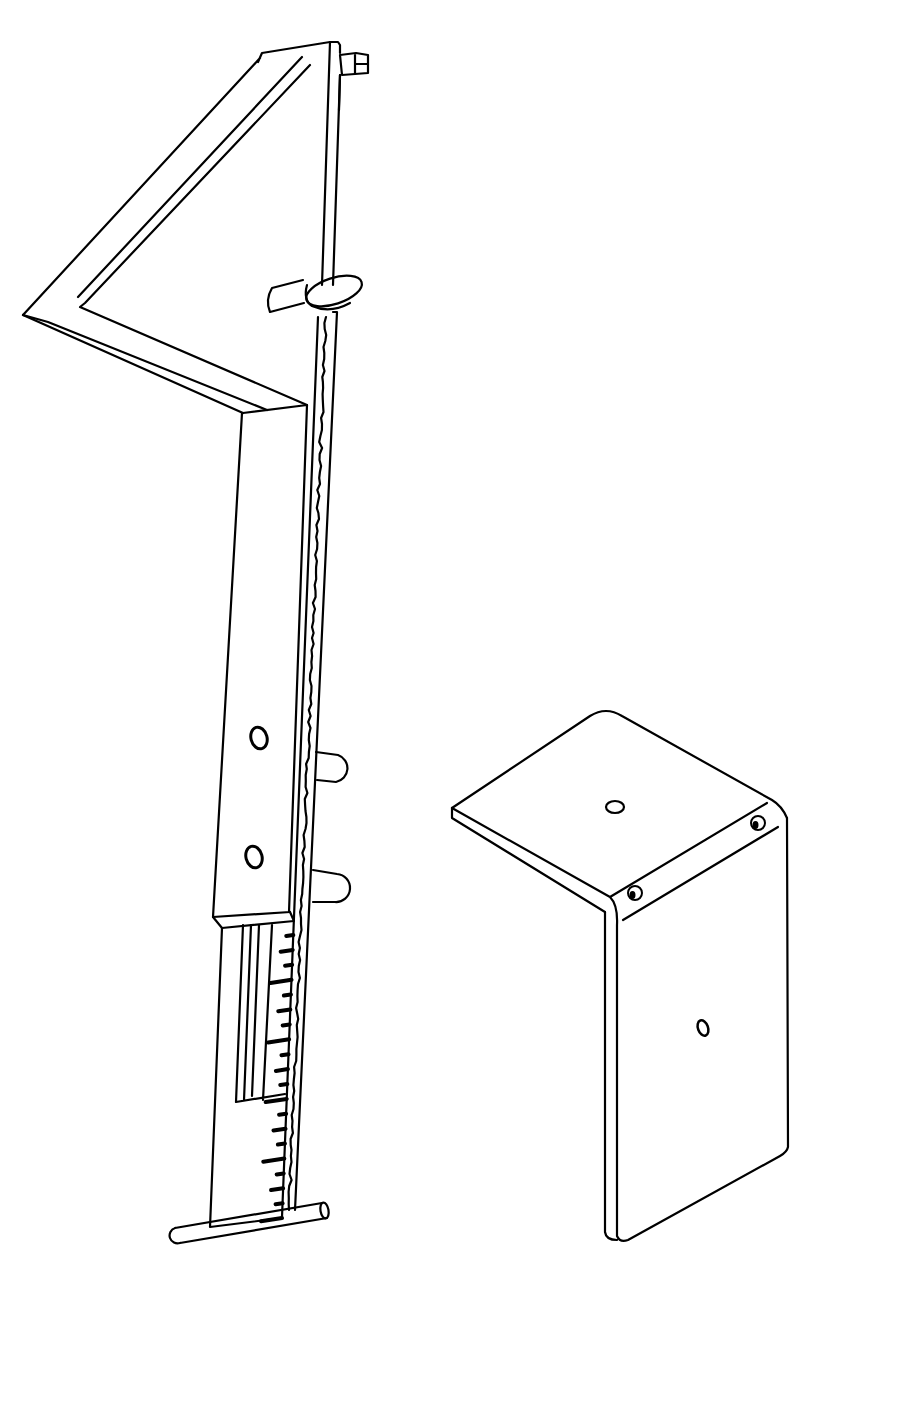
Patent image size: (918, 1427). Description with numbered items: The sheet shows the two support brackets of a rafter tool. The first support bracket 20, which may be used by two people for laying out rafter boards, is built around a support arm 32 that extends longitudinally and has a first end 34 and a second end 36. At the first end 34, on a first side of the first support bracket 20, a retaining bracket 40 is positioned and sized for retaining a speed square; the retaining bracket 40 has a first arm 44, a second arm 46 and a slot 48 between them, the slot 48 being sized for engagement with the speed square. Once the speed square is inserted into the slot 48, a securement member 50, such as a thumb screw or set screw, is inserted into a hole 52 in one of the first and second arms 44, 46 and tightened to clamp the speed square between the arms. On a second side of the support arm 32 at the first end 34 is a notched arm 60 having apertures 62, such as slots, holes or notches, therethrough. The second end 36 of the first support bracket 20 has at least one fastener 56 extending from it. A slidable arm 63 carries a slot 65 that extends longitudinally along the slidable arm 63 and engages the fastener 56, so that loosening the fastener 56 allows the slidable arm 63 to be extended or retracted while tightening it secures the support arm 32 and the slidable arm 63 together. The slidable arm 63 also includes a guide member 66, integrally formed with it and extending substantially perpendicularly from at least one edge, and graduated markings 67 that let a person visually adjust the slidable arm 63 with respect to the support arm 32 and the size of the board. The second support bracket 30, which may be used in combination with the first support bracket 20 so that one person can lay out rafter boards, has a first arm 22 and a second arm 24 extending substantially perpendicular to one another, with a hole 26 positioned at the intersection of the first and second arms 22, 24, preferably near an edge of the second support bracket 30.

In FIG. 1, the first support bracket 20 is at (553, 67).
In FIG. 2, the first arm 22 is at (627, 745).
In FIG. 2, the second arm 24 is at (632, 1130).
In FIG. 2, the hole 26 is at (773, 800).
In FIG. 2, the second support bracket 30 is at (738, 675).
In FIG. 1, the support arm 32 is at (258, 448).
In FIG. 1, the first end 34 is at (335, 202).
In FIG. 1, the second end 36 is at (241, 895).
In FIG. 1, the retaining bracket 40 is at (152, 197).
In FIG. 1, the first arm 44 is at (167, 353).
In FIG. 1, the second arm 46 is at (100, 348).
In FIG. 1, the slot 48 is at (145, 355).
In FIG. 1, the securement member 50 is at (357, 283).
In FIG. 1, the hole 52 is at (273, 316).
In FIG. 1, the fastener 56 is at (327, 760).
In FIG. 1, the notched arm 60 is at (345, 75).
In FIG. 1, the apertures 62 is at (372, 54).
In FIG. 1, the slidable arm 63 is at (237, 1160).
In FIG. 1, the slot 65 is at (257, 1027).
In FIG. 1, the guide member 66 is at (313, 1212).
In FIG. 1, the graduated markings 67 is at (293, 977).